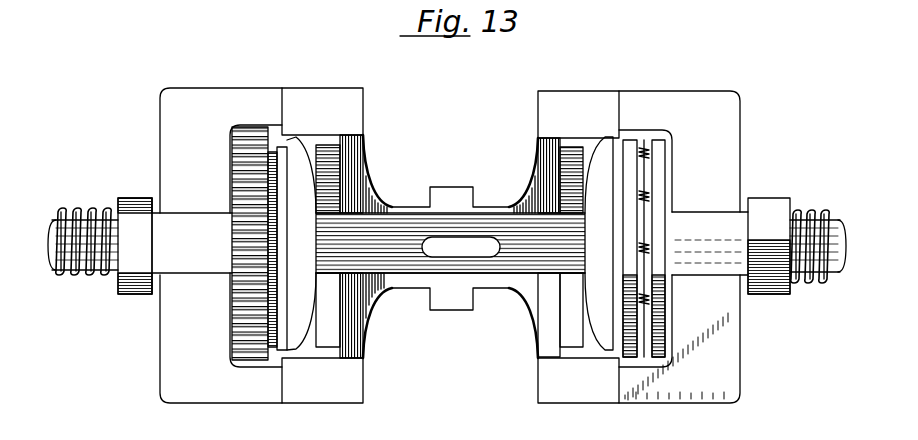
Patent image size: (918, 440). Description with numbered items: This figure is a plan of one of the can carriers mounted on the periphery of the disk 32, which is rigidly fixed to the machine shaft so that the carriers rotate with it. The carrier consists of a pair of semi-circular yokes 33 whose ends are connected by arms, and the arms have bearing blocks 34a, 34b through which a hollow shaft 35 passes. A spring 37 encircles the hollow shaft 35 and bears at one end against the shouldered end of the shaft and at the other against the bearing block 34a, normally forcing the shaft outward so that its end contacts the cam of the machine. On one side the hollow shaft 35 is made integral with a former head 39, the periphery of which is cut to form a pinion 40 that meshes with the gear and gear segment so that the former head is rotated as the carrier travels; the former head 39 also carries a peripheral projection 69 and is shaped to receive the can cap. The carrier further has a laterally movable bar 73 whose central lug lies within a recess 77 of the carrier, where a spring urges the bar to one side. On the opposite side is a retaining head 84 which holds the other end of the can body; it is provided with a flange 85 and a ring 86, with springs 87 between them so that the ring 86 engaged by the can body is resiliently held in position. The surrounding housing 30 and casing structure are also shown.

The housing member 30 is at (168, 112).
The disk 32 is at (465, 302).
The semi-circular yokes 33 is at (350, 123).
The bearing block 34a is at (780, 185).
The bearing block 34b is at (450, 243).
The hollow shaft 35 is at (94, 273).
The spring 37 is at (88, 217).
The former head 39 is at (230, 307).
The pinions 40 is at (238, 323).
The peripheral projection 69 is at (284, 239).
The laterally movable bar 73 is at (405, 266).
The recess 77 is at (460, 243).
The retaining heads 84 is at (665, 184).
The flange 85 is at (657, 150).
The ring 86 is at (620, 207).
The springs 87 is at (643, 152).